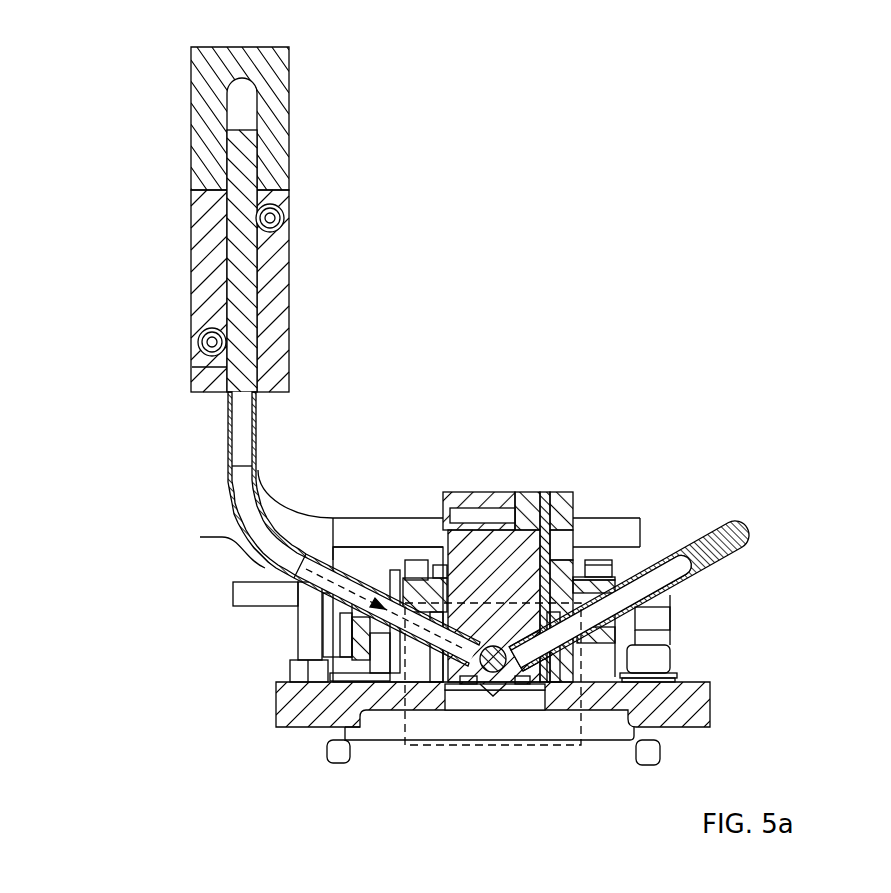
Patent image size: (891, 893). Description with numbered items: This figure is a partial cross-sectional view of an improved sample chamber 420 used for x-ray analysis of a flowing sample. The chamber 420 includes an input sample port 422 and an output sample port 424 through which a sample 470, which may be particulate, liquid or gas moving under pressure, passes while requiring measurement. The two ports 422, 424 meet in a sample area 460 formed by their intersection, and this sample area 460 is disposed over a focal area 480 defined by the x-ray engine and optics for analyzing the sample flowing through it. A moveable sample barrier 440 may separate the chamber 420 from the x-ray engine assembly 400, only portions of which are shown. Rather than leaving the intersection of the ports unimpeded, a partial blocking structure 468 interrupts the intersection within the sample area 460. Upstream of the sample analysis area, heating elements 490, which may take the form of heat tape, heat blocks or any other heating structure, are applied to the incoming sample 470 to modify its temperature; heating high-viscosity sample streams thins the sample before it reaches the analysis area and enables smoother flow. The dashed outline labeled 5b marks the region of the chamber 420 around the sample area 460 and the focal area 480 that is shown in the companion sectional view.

The x-ray engine assembly 400 is at (372, 738).
The sample chamber 420 is at (745, 617).
The input sample port 422 is at (430, 640).
The output sample port 424 is at (556, 646).
The moveable sample barrier 440 is at (519, 702).
The sample area 460 is at (515, 626).
The partial blocking structure 468 is at (462, 688).
The sample 470 is at (288, 575).
The focal area 480 is at (490, 706).
The heating elements 490 is at (226, 211).
The section 5b is at (583, 720).